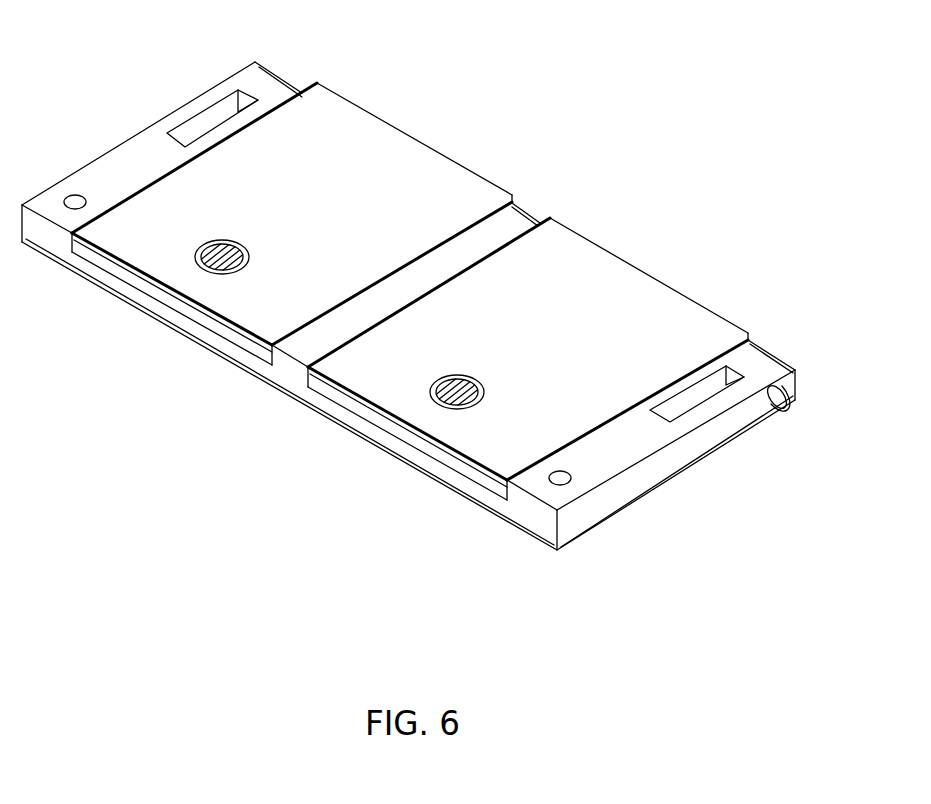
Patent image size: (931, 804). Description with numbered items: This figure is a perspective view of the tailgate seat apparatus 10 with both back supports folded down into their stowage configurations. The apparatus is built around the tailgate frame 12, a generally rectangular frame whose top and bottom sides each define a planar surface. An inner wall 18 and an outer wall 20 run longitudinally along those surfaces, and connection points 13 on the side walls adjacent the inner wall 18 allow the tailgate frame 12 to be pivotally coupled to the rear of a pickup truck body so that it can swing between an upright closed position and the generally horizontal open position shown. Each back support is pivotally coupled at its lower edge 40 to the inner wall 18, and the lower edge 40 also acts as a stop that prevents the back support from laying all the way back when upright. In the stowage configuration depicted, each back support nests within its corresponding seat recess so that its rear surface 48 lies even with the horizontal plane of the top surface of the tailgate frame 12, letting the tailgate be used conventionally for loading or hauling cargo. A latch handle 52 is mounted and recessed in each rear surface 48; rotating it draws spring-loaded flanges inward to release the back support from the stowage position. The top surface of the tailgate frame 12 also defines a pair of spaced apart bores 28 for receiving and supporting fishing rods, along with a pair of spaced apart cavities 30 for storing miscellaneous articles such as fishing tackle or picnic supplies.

The tailgate seat apparatus 10 is at (549, 77).
The tailgate frame 12 is at (114, 80).
The connection points 13 is at (788, 395).
The inner wall 18 is at (527, 220).
The outer wall 20 is at (95, 277).
The bores 28 is at (68, 195).
The cavities 30 is at (215, 103).
The lower edge 40 is at (375, 113).
The rear surface 48 is at (411, 285).
The latch handle 52 is at (248, 247).